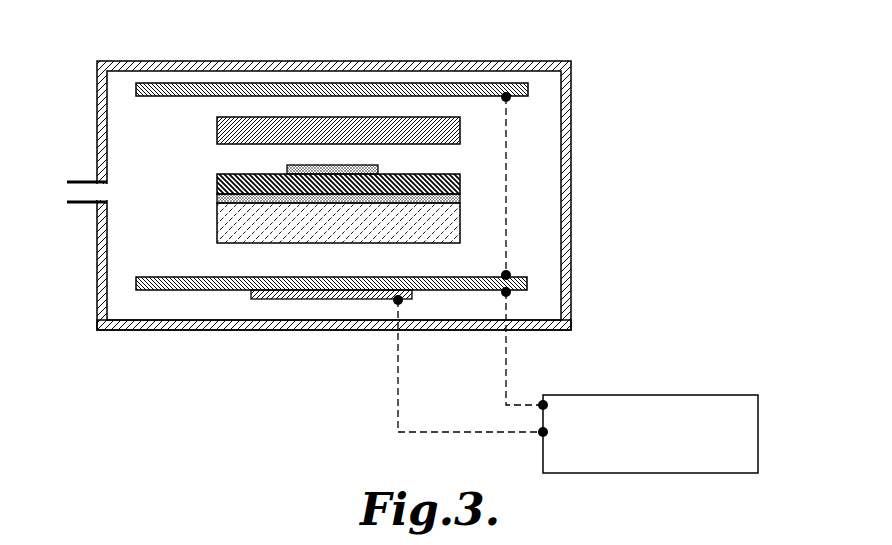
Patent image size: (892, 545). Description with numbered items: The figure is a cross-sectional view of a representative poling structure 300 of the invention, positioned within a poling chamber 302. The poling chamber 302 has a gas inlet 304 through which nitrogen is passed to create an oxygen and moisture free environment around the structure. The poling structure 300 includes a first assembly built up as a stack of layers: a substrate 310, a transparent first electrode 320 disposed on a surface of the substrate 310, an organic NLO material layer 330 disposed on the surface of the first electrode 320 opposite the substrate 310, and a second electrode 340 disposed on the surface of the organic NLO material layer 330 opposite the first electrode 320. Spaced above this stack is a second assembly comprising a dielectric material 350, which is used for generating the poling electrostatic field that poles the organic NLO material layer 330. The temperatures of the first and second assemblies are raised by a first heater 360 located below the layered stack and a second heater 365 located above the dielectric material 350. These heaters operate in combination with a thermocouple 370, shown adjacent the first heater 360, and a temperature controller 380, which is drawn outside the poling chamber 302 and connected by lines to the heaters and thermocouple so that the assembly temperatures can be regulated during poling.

The poling structure 300 is at (491, 78).
The poling chamber 302 is at (305, 331).
The gas inlet 304 is at (76, 192).
The substrate 310 is at (217, 222).
The transparent first electrode 320 is at (217, 199).
The organic NLO material layer 330 is at (217, 178).
The second electrode 340 is at (287, 168).
The dielectric material 350 is at (217, 130).
The first heater 360 is at (192, 280).
The second heater 365 is at (194, 90).
The thermocouple 370 is at (252, 293).
The temperature controller 380 is at (758, 423).